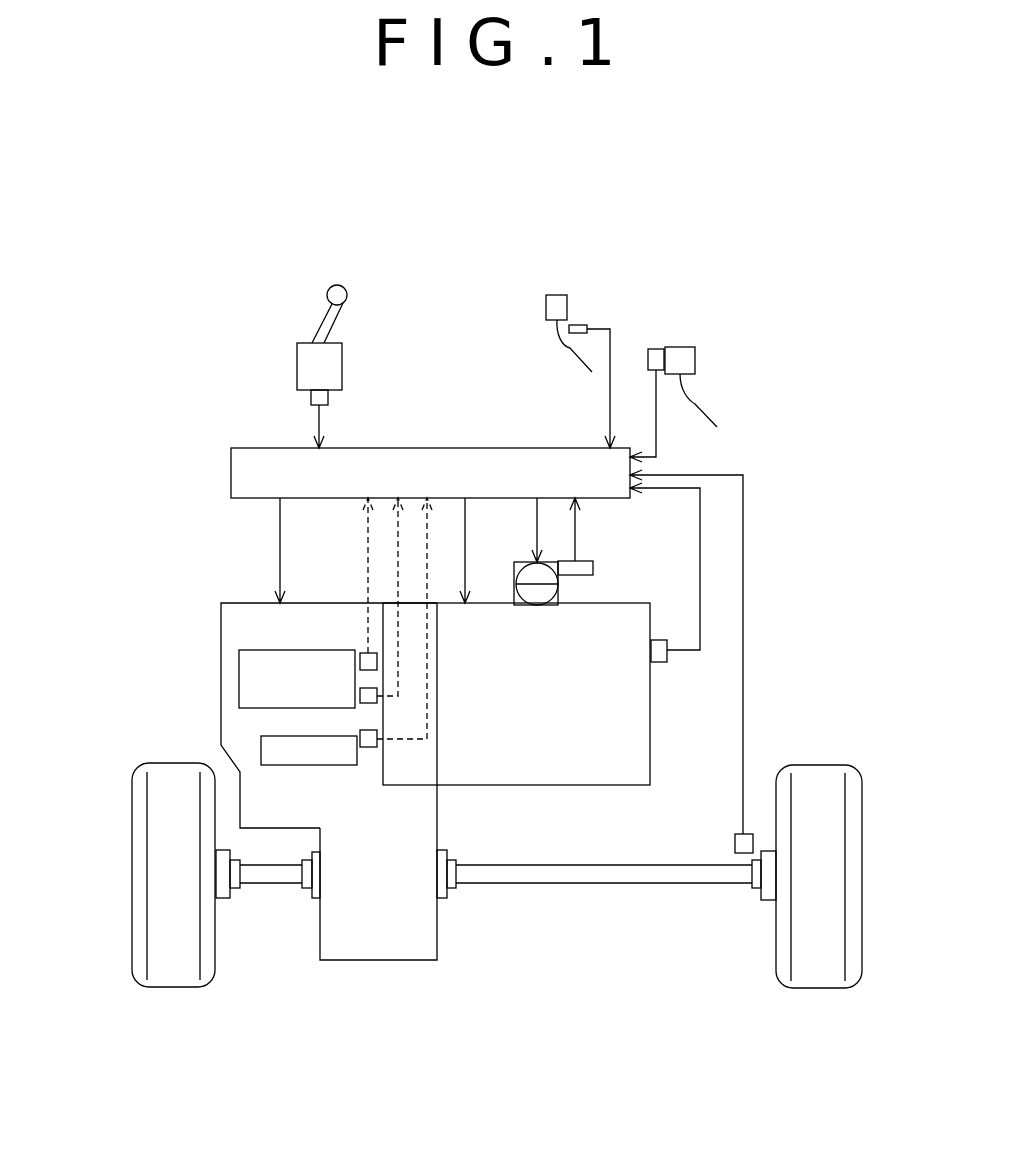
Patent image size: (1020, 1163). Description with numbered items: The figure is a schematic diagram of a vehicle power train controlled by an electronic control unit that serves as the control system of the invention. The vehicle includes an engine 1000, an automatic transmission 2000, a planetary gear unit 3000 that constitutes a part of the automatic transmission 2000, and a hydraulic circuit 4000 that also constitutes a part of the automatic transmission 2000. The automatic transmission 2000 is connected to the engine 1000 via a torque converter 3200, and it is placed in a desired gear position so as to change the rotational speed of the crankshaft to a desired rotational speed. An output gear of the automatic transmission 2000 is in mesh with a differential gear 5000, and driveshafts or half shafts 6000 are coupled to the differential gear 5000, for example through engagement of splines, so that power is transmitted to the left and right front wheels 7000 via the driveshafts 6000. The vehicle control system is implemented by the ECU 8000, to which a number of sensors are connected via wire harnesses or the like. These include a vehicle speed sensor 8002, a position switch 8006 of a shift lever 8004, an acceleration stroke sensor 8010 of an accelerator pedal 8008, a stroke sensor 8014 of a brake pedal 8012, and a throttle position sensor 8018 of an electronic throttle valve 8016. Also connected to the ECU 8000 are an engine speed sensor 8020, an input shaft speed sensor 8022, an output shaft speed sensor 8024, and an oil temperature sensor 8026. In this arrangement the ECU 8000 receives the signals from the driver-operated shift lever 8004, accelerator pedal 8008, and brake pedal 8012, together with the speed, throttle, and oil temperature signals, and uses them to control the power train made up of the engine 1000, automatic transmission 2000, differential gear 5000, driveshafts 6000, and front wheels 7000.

The engine 1000 is at (545, 787).
The automatic transmission 2000 is at (305, 603).
The planetary gear unit 3000 is at (239, 677).
The torque converter 3200 is at (440, 723).
The hydraulic circuit 4000 is at (302, 765).
The differential gear 5000 is at (377, 960).
The driveshafts 6000 is at (270, 885).
The front wheels 7000 is at (170, 987).
The ECU 8000 is at (520, 447).
The vehicle speed sensor 8002 is at (735, 842).
The shift lever 8004 is at (337, 313).
The position switch 8006 is at (310, 400).
The accelerator pedal 8008 is at (560, 347).
The acceleration stroke sensor 8010 is at (578, 322).
The brake pedal 8012 is at (687, 383).
The stroke sensor 8014 is at (657, 350).
The electronic throttle valve 8016 is at (560, 598).
The throttle position sensor 8018 is at (605, 561).
The engine speed sensor 8020 is at (658, 662).
The input shaft speed sensor 8022 is at (363, 653).
The output shaft speed sensor 8024 is at (363, 703).
The oil temperature sensor 8026 is at (367, 747).